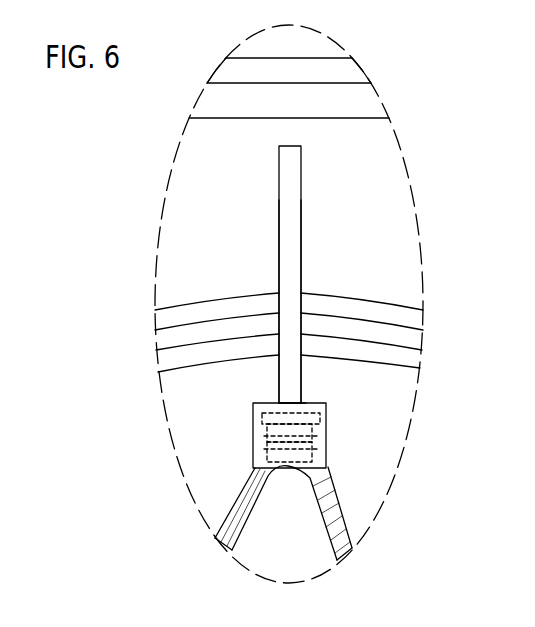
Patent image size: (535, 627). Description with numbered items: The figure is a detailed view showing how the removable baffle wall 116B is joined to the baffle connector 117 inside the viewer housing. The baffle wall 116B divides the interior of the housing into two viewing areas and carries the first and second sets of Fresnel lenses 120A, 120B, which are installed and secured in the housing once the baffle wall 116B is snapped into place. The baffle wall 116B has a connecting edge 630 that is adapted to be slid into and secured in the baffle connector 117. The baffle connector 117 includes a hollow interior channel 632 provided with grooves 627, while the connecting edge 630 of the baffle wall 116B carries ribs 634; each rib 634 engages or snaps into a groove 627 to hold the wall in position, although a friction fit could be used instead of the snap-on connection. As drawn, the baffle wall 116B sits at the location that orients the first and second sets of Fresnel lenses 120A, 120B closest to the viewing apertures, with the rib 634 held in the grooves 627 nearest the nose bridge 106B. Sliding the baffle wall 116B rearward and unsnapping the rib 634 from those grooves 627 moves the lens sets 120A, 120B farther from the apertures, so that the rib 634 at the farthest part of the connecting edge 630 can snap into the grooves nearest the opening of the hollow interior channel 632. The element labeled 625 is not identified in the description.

The guide channel 625 is at (290, 182).
The removable baffle wall 116B is at (288, 224).
The first set of Fresnel lenses 120A is at (232, 285).
The second set of Fresnel lenses 120B is at (353, 285).
The baffle connector 117 is at (327, 430).
The hollow interior channel 632 is at (306, 404).
The connecting edge 630 is at (287, 433).
The groove 627 is at (273, 440).
The rib 634 is at (313, 443).
The nose bridge 106B is at (348, 492).